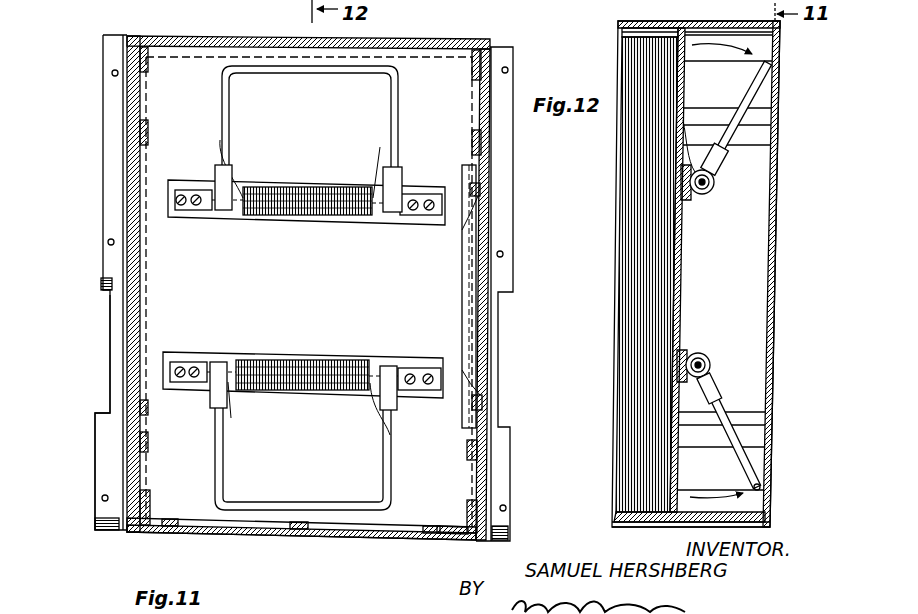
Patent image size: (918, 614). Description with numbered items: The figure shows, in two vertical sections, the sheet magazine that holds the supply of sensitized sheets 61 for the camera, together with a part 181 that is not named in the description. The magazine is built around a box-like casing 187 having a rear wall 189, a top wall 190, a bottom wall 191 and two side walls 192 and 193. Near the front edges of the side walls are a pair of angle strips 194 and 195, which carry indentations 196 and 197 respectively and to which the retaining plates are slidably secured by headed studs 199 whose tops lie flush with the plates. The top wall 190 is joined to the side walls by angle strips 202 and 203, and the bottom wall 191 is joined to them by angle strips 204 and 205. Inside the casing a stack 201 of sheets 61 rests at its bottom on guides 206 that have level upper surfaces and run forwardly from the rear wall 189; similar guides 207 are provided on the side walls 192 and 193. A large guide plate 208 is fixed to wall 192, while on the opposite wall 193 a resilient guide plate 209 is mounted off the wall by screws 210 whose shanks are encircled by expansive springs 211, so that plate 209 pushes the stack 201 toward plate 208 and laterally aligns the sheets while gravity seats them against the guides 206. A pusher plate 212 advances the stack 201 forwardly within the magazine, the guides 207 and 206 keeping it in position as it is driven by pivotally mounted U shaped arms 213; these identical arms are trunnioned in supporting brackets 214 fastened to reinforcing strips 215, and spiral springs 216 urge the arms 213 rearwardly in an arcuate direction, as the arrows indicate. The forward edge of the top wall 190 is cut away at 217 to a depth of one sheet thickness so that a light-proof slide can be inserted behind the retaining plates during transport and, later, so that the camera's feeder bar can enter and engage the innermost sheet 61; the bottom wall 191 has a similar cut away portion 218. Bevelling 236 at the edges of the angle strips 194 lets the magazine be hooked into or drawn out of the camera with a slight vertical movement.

In FIG. 12, the sheets 61 is at (650, 257).
In FIG. 11, the bottom wall 181 is at (237, 533).
In FIG. 12, the casing 187 is at (752, 352).
In FIG. 12, the rear wall 189 is at (752, 272).
In FIG. 11, the top wall 190 is at (243, 37).
In FIG. 12, the bottom wall 191 is at (718, 525).
In FIG. 11, the side wall 192 is at (128, 93).
In FIG. 11, the side wall 193 is at (488, 120).
In FIG. 12, the side wall 193 is at (742, 217).
In FIG. 11, the angle strip 194 is at (103, 162).
In FIG. 11, the angle strip 195 is at (500, 208).
In FIG. 11, the indentation 196 is at (108, 351).
In FIG. 11, the indentation 197 is at (500, 366).
In FIG. 11, the headed studs 199 is at (507, 508).
In FIG. 12, the stack 201 is at (633, 297).
In FIG. 11, the angle strip 202 is at (140, 55).
In FIG. 11, the angle strip 203 is at (483, 68).
In FIG. 11, the angle strip 204 is at (131, 507).
In FIG. 11, the angle strip 205 is at (463, 530).
In FIG. 11, the guides 206 is at (177, 530).
In FIG. 12, the guides 206 is at (733, 509).
In FIG. 11, the guides 207 is at (148, 133).
In FIG. 11, the guide plate 208 is at (140, 300).
In FIG. 11, the resilient guide plate 209 is at (470, 268).
In FIG. 11, the screws 210 is at (481, 185).
In FIG. 11, the expansive springs 211 is at (478, 200).
In FIG. 12, the pusher plate 212 is at (677, 300).
In FIG. 11, the U shaped arms 213 is at (315, 70).
In FIG. 11, the supporting brackets 214 is at (187, 362).
In FIG. 11, the reinforcing strips 215 is at (202, 212).
In FIG. 11, the spiral springs 216 is at (306, 215).
In FIG. 12, the cut away portion 217 is at (623, 24).
In FIG. 12, the cut away portion 218 is at (610, 520).
In FIG. 11, the bevelling 236 is at (100, 290).